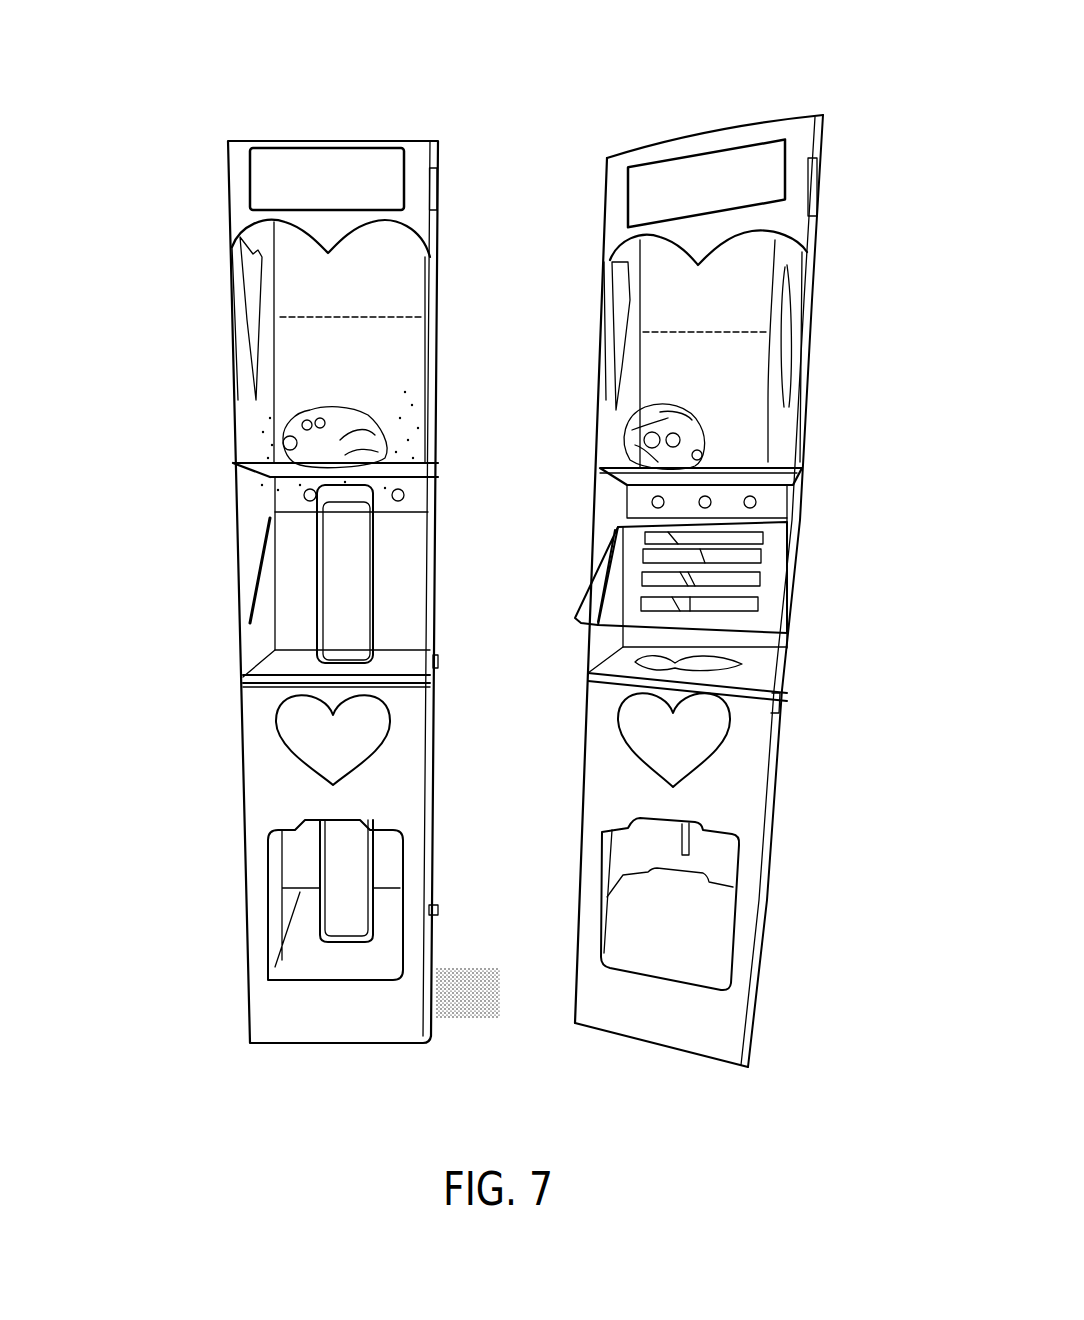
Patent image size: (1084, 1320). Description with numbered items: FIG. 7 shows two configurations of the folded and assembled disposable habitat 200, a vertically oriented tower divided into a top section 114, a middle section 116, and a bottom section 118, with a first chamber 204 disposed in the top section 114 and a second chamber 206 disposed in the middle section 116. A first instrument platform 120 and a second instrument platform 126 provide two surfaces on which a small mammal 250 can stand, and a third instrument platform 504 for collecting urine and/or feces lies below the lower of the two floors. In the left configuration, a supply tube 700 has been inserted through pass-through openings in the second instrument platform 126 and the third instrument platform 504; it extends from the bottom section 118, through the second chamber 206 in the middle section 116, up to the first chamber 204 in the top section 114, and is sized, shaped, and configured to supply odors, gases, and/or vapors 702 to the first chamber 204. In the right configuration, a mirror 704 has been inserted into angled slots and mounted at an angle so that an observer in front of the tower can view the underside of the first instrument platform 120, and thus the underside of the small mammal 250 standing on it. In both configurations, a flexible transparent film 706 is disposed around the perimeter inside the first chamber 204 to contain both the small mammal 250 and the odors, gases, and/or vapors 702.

The habitat 200 is at (490, 114).
The first chamber 204 is at (642, 293).
The flexible transparent film 706 is at (427, 344).
The odors, gases, and/or vapors 702 is at (413, 398).
The small mammal 250 is at (287, 433).
The top section 114 is at (196, 395).
The first instrument platform 120 is at (237, 463).
The middle section 116 is at (206, 555).
The second chamber 206 is at (418, 548).
The supply tube 700 is at (363, 604).
The mirror 704 is at (763, 570).
The second instrument platform 126 is at (288, 665).
The bottom section 118 is at (204, 854).
The third instrument platform 504 is at (305, 967).